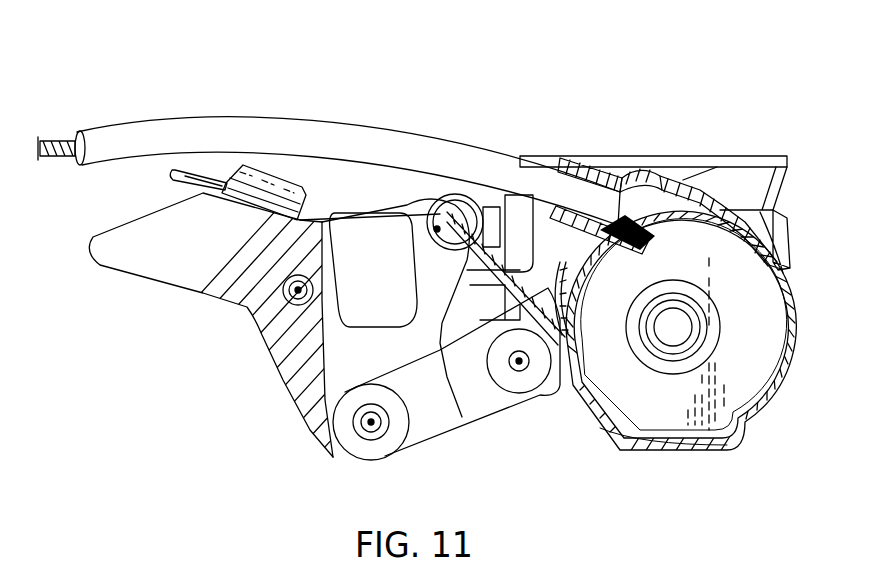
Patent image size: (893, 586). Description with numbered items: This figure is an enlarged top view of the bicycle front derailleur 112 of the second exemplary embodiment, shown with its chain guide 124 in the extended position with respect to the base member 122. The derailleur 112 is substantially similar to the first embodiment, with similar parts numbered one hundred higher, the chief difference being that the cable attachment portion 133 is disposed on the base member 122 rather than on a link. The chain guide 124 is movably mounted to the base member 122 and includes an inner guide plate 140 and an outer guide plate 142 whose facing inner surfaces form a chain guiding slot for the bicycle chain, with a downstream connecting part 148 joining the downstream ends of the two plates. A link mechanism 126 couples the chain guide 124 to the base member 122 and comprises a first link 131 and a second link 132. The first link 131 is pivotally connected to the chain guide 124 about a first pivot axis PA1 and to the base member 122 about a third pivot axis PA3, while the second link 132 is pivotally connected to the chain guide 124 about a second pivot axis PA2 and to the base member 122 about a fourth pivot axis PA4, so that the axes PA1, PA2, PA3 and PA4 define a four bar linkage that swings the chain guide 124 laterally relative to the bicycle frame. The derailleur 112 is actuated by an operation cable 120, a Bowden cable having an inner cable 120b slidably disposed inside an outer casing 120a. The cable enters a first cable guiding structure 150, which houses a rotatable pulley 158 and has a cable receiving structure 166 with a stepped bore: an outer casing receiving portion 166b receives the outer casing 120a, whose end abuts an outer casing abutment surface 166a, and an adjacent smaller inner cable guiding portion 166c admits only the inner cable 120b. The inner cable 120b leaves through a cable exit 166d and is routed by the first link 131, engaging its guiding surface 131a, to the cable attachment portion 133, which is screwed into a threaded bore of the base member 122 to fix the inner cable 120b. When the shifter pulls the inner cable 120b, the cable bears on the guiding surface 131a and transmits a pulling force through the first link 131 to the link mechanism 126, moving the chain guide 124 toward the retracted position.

The bicycle front derailleur 112 is at (208, 36).
The operation cable 120 is at (145, 78).
The outer casing 120a is at (113, 128).
The inner cable 120b is at (50, 142).
The base member 122 is at (155, 288).
The chain guide 124 is at (708, 152).
The link mechanism 126 is at (436, 442).
The first link 131 is at (482, 420).
The guiding surface 131a is at (443, 212).
The second link 132 is at (400, 200).
The cable attachment portion 133 is at (276, 176).
The inner guide plate 140 is at (590, 265).
The outer guide plate 142 is at (752, 154).
The downstream connecting part 148 is at (506, 196).
The first cable guiding structure 150 is at (757, 433).
The rotatable pulley 158 is at (640, 432).
The cable receiving structure 166 is at (651, 229).
The outer casing abutment surface 166a is at (648, 172).
The outer casing receiving portion 166b is at (598, 168).
The inner cable guiding portion 166c is at (664, 186).
The cable exit 166d is at (572, 320).
The first pivot axis PA1 is at (519, 368).
The second pivot axis PA2 is at (430, 234).
The third pivot axis PA3 is at (371, 428).
The fourth pivot axis PA4 is at (300, 290).